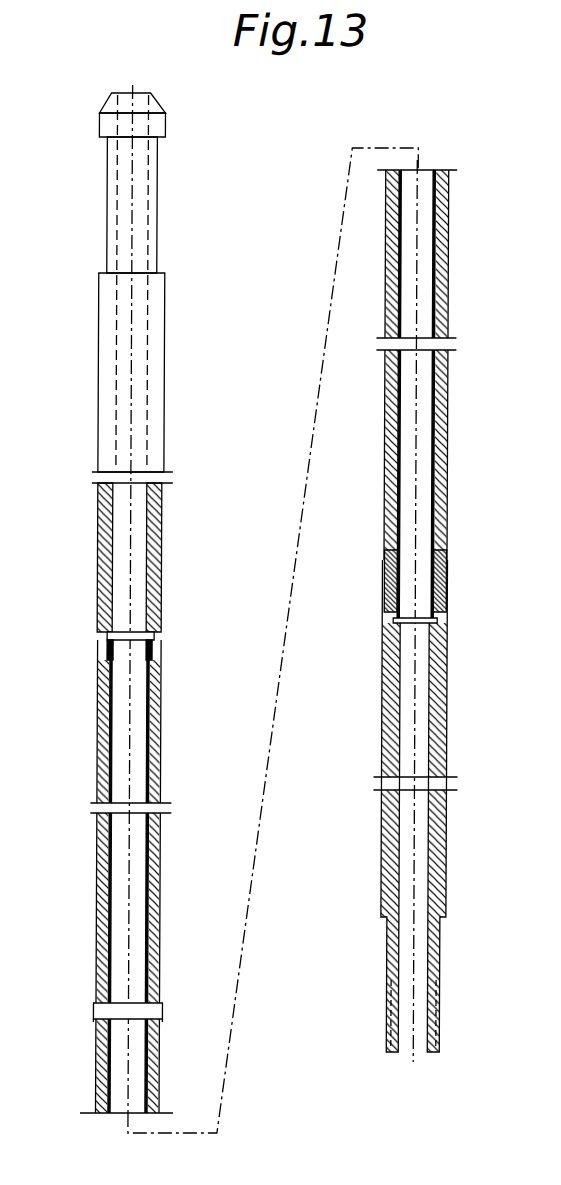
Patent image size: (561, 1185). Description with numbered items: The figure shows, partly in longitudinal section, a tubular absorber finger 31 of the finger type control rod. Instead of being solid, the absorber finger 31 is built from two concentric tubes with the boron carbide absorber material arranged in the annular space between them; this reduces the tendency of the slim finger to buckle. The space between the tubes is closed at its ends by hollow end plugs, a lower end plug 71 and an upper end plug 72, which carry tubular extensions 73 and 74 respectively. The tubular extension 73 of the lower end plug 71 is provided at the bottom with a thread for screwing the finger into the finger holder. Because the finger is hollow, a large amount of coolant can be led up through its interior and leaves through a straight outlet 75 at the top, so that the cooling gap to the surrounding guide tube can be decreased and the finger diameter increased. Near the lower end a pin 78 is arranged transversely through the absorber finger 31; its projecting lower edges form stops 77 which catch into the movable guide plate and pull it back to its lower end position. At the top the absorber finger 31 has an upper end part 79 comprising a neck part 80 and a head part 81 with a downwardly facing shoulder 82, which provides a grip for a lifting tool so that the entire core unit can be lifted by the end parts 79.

The absorber finger 31 is at (90, 656).
The lower end plug 71 is at (447, 584).
The upper end plug 72 is at (160, 673).
The tubular extension of lower end plug 73 is at (442, 683).
The tubular extension of upper end plug 74 is at (156, 528).
The straight outlet 75 is at (137, 93).
The stops 77 is at (167, 1021).
The pin 78 is at (156, 1008).
The upper end part 79 is at (208, 333).
The neck part 80 is at (158, 206).
The head part 81 is at (161, 111).
The shoulder 82 is at (163, 138).